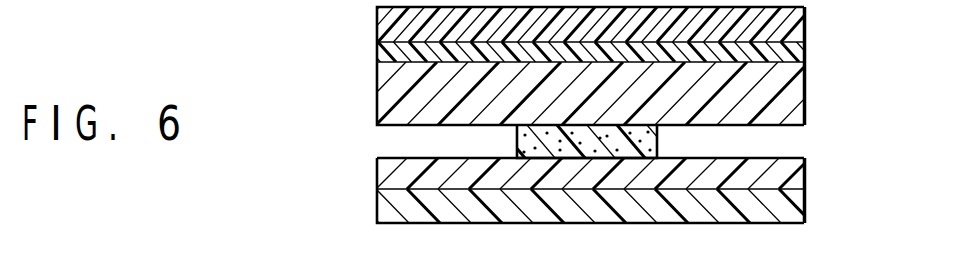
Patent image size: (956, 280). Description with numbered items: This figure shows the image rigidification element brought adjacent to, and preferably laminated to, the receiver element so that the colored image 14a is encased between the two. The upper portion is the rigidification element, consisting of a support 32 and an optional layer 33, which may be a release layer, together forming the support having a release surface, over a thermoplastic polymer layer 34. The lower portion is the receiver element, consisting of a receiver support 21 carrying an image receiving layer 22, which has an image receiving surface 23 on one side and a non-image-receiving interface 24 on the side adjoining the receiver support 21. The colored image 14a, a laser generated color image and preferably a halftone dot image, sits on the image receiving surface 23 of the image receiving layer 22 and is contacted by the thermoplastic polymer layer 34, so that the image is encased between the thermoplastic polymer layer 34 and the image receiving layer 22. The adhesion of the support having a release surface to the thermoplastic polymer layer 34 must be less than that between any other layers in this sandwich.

The support 32 is at (806, 24).
The optional layer 33 is at (806, 52).
The thermoplastic polymer layer 34 is at (806, 93).
The colored image 14a is at (659, 142).
The image receiving surface 23 is at (783, 158).
The image receiving layer 22 is at (806, 173).
The receiver support 21 is at (806, 207).
The non-image-receiving interface 24 is at (768, 195).